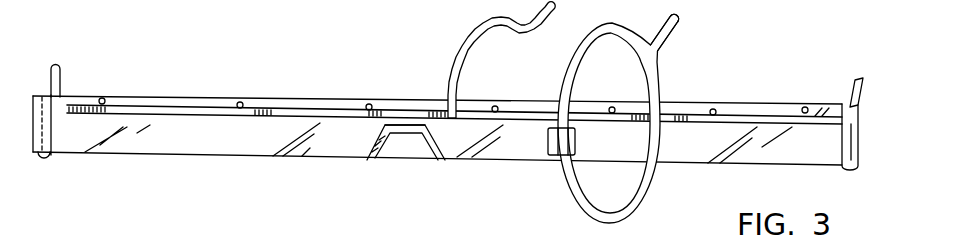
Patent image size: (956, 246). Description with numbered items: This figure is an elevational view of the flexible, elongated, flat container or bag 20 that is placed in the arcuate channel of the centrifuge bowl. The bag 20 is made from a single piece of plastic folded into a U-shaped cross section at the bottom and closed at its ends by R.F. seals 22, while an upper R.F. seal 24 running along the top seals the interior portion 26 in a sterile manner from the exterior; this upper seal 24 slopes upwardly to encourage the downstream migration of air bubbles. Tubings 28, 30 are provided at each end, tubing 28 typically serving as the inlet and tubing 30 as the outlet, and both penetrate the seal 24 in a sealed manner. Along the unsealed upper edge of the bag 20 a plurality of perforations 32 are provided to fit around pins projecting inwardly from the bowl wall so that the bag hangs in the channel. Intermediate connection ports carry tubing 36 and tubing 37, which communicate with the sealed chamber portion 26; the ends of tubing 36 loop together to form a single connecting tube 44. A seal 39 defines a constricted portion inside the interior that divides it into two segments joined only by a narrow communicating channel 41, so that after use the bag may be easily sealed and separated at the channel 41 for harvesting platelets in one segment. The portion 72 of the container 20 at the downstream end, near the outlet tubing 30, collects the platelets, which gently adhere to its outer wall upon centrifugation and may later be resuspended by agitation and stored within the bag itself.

The flexible, elongated, flat container or bag 20 is at (163, 148).
The R.F. seals 22 is at (44, 94).
The upper R.F. seal 24 is at (679, 119).
The interior portion 26 is at (517, 138).
The tubing 28 is at (852, 99).
The tubing 30 is at (60, 82).
The perforations 32 is at (241, 101).
The tubing 36 is at (558, 82).
The tubing 37 is at (459, 53).
The seal 39 is at (400, 134).
The narrow communicating channel 41 is at (397, 121).
The single connecting tube 44 is at (673, 30).
The portion of container which collects platelets 72 is at (247, 140).